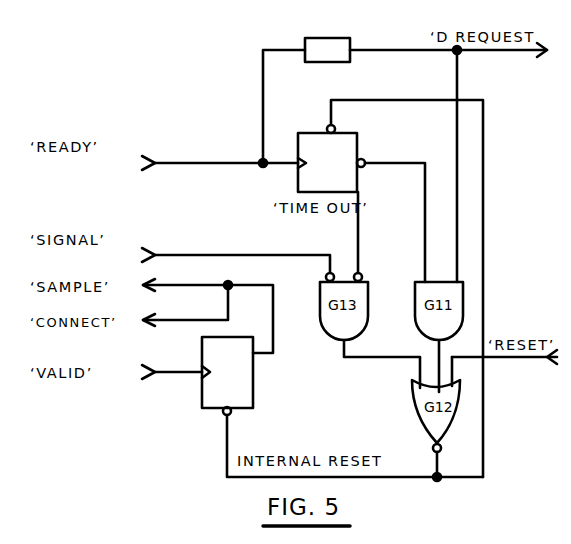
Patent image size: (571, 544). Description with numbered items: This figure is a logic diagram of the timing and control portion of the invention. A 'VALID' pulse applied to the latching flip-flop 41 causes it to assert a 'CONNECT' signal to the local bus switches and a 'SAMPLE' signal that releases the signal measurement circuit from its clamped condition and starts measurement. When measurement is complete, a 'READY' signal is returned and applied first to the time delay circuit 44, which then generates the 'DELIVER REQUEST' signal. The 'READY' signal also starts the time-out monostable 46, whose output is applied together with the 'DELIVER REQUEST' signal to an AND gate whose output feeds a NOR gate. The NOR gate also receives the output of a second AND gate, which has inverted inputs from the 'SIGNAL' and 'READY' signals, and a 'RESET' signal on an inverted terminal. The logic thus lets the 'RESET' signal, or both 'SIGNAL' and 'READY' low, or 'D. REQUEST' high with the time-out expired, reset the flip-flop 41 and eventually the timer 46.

The time delay circuit 44 is at (332, 38).
The time-out monostable 46 is at (350, 136).
The latching flip-flop 41 is at (205, 408).